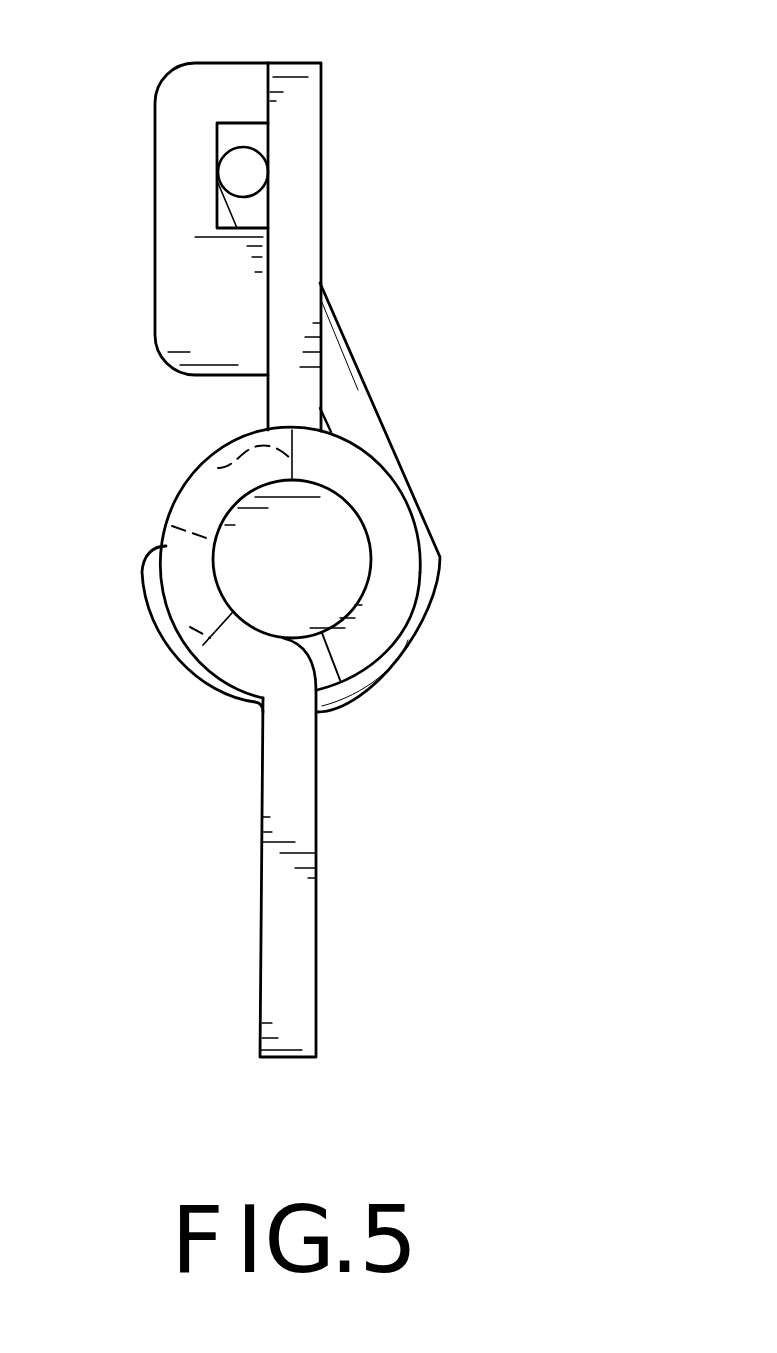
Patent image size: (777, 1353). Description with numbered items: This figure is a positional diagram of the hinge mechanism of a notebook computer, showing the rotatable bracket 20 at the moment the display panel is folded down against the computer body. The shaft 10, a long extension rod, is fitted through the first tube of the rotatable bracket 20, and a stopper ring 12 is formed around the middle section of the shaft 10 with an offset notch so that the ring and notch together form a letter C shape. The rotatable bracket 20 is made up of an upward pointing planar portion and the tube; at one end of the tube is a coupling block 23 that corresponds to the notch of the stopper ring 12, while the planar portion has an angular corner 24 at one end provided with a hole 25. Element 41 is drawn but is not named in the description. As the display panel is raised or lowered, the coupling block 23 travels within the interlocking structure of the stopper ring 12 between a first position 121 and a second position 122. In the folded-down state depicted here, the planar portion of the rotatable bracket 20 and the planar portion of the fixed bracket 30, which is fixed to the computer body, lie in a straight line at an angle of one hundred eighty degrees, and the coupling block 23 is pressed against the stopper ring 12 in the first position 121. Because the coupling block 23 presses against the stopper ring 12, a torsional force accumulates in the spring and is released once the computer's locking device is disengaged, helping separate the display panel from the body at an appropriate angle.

The shaft 10 is at (322, 518).
The stopper ring 12 is at (394, 570).
The rotatable bracket 20 is at (298, 100).
The coupling block 23 is at (175, 586).
The angular corner 24 is at (210, 87).
The hole 25 is at (260, 137).
The fixed bracket 30 is at (290, 997).
The pin 41 is at (243, 183).
The first position 121 is at (190, 647).
The second position 122 is at (218, 468).